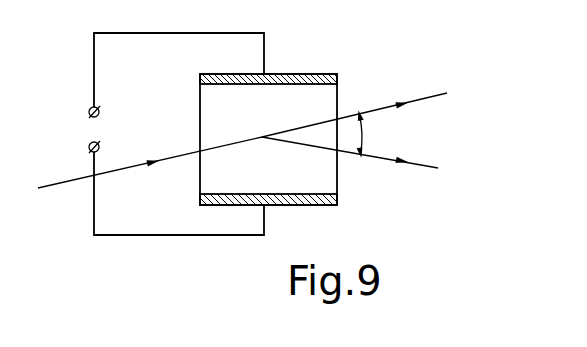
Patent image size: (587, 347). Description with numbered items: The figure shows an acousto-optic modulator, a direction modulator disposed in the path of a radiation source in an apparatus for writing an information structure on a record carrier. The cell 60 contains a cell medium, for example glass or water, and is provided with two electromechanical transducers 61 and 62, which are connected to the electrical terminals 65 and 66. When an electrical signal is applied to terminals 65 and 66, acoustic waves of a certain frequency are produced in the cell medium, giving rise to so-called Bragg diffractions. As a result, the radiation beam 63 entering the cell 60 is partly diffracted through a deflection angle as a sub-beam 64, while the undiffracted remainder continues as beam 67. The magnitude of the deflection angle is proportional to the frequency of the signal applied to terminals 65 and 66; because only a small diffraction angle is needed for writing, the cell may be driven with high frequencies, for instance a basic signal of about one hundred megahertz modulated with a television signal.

The cell 60 is at (317, 178).
The electromechanical transducer 61 is at (298, 206).
The electromechanical transducer 62 is at (300, 74).
The radiation beam 63 is at (67, 186).
The sub-beam 64 is at (368, 158).
The electrical terminal 65 is at (91, 109).
The electrical terminal 66 is at (91, 152).
The undeflected light beam 67 is at (368, 109).